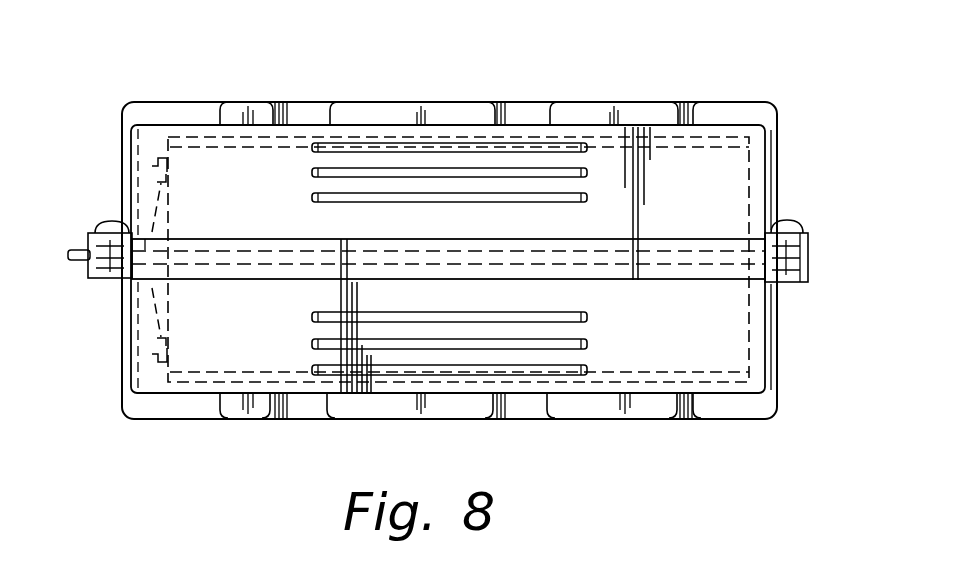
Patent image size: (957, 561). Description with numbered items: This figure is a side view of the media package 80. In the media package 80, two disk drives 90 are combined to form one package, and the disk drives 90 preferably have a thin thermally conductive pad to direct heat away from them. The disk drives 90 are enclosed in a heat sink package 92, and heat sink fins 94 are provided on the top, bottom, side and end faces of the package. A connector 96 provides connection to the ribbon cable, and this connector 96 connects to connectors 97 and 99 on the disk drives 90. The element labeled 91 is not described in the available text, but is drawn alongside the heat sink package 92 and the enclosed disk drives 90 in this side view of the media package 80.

The media package 80 is at (757, 84).
The disk drives 90 is at (753, 192).
The tray 91 is at (760, 147).
The heat sink package 92 is at (581, 124).
The heat sink fins 94 is at (517, 102).
The connector 96 is at (74, 247).
The connector 97 is at (140, 162).
The connector 99 is at (143, 365).